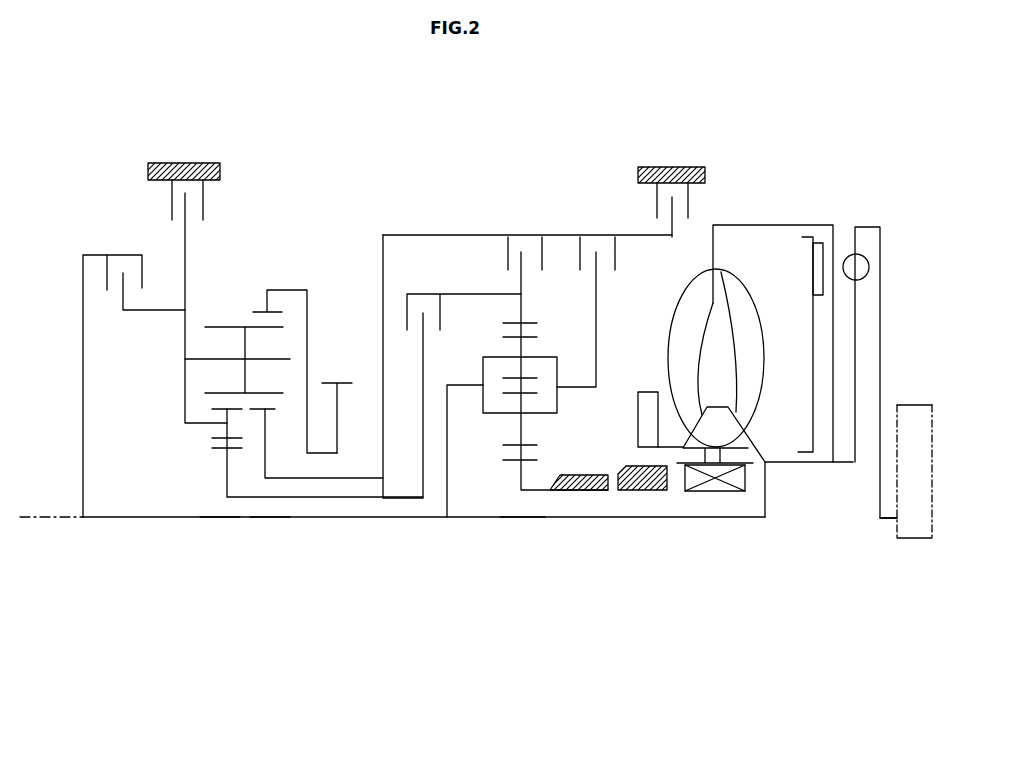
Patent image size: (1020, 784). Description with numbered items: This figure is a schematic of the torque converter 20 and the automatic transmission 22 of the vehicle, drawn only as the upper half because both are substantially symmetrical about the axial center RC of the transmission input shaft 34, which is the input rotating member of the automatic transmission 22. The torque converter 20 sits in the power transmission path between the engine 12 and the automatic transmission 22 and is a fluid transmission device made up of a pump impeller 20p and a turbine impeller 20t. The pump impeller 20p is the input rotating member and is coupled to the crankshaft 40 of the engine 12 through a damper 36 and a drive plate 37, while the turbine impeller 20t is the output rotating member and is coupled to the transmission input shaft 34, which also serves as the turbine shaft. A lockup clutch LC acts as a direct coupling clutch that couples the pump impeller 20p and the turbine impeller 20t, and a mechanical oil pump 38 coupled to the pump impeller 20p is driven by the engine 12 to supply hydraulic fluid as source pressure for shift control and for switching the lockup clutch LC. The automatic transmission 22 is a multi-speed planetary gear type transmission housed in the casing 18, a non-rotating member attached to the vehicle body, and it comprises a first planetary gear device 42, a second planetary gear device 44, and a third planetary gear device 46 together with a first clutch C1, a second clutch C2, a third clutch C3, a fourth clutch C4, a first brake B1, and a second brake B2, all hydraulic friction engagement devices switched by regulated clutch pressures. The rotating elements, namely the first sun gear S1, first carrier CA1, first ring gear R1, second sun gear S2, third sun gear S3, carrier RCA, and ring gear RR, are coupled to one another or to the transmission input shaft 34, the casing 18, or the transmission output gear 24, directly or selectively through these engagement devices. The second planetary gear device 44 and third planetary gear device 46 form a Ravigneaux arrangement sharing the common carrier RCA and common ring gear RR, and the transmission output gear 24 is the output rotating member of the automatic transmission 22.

The automatic transmission 22 is at (140, 100).
The casing 18 is at (192, 163).
The second brake B2 is at (202, 301).
The second clutch C2 is at (134, 374).
The ring gear RR is at (255, 312).
The carrier RCA is at (183, 378).
The transmission output gear 24 is at (338, 383).
The third sun gear S3 is at (217, 442).
The second sun gear S2 is at (277, 407).
The first clutch C1 is at (452, 366).
The first carrier CA1 is at (468, 385).
The third clutch C3 is at (527, 353).
The fourth clutch C4 is at (586, 301).
The first ring gear R1 is at (528, 322).
The first sun gear S1 is at (513, 452).
The first brake B1 is at (656, 210).
The torque converter 20 is at (773, 208).
The lockup clutch LC is at (800, 247).
The pump impeller 20p is at (683, 375).
The turbine impeller 20t is at (752, 360).
The mechanical oil pump 38 is at (640, 417).
The damper 36 is at (862, 258).
The drive plate 37 is at (882, 318).
The engine 12 is at (908, 408).
The crankshaft 40 is at (882, 520).
The transmission input shaft 34 is at (600, 517).
The axial center RC is at (33, 517).
The third planetary gear device 46 is at (222, 525).
The second planetary gear device 44 is at (268, 525).
The first planetary gear device 42 is at (522, 527).